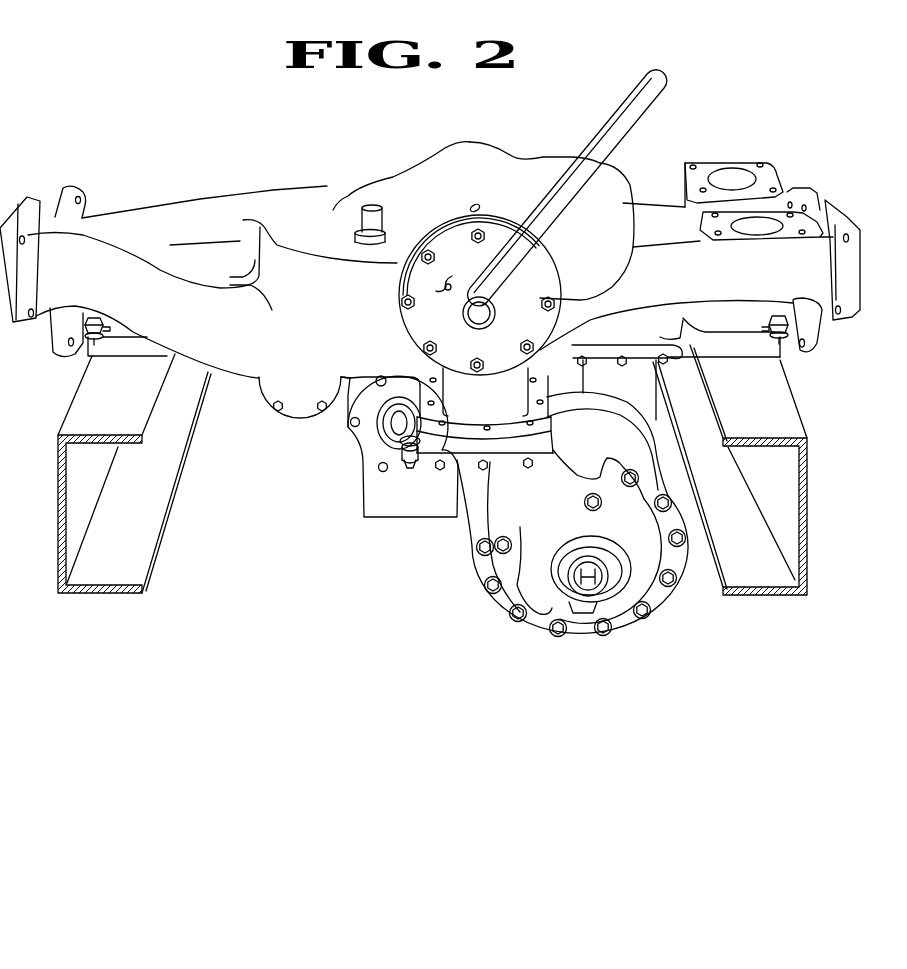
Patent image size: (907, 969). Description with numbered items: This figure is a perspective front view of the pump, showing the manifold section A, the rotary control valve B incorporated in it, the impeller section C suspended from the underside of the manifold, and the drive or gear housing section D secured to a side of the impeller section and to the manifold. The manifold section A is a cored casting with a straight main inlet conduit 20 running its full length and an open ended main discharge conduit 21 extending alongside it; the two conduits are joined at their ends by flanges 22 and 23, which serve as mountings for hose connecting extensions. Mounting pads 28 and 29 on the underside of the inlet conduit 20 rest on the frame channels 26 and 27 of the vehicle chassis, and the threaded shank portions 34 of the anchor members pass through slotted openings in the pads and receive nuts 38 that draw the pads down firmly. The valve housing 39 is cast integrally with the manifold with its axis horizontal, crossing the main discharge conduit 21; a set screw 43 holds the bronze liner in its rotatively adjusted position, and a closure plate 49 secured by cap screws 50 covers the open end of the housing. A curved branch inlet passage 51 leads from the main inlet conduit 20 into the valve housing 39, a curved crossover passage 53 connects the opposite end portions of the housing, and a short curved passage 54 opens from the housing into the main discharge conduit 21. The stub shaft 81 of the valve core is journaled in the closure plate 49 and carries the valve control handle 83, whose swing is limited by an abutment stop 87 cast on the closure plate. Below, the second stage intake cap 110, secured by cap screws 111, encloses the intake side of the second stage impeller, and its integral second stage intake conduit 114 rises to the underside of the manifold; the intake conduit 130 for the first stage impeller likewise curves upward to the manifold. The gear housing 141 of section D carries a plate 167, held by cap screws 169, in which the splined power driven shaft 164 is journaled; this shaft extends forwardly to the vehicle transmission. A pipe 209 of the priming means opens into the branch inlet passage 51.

The main inlet conduit 20 is at (293, 208).
The main discharge conduit 21 is at (107, 287).
The flange 22 is at (843, 212).
The flange 23 is at (74, 190).
The frame channel 26 is at (802, 543).
The frame channel 27 is at (58, 483).
The mounting pad 28 is at (133, 343).
The mounting pad 29 is at (778, 350).
The shank portion 34 is at (96, 315).
The nut 38 is at (96, 340).
The valve housing 39 is at (473, 172).
The set screw 43 is at (472, 205).
The closure plate 49 is at (551, 285).
The cap screws 50 is at (476, 231).
The branch inlet passage 51 is at (317, 292).
The crossover passage 53 is at (603, 190).
The short curved passage 54 is at (387, 190).
The stub shaft 81 is at (463, 311).
The valve control handle 83 is at (669, 82).
The abutment stop 87 is at (452, 276).
The second stage intake cap 110 is at (604, 537).
The cap screws 111 is at (548, 633).
The second stage intake conduit 114 is at (515, 486).
The intake conduit 130 is at (640, 388).
The gear housing 141 is at (330, 431).
The power driven shaft 164 is at (409, 468).
The plate 167 is at (367, 440).
The cap screws 169 is at (382, 376).
The pipe 209 is at (362, 223).
The manifold section A is at (313, 200).
The rotary control valve B is at (462, 326).
The impeller section C is at (471, 581).
The gear housing section D is at (362, 474).